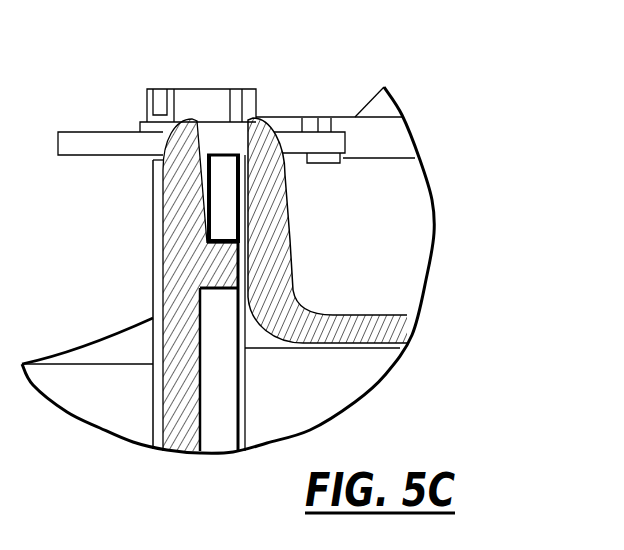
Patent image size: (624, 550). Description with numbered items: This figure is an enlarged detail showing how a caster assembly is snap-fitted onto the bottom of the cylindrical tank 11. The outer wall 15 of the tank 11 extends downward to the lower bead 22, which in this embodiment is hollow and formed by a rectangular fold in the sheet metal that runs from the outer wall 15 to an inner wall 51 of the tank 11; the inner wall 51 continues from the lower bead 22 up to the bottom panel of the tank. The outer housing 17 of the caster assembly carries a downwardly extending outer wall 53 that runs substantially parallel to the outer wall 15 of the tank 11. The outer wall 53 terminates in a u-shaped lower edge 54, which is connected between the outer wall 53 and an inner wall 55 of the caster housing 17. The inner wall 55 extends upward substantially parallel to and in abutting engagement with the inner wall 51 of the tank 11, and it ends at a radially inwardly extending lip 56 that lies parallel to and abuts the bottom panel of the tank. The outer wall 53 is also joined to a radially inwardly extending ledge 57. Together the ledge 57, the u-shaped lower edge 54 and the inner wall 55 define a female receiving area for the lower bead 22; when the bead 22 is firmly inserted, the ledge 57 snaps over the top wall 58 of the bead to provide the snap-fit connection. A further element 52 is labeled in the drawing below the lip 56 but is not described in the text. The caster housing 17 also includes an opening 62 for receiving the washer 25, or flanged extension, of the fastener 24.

The tank 11 is at (226, 423).
The outer wall 15 is at (248, 432).
The outer housing 17 is at (150, 398).
The lower bead 22 is at (223, 138).
The fastener 24 is at (229, 120).
The washer 25 is at (315, 138).
The inner wall 51 is at (249, 325).
The housing wall 52 is at (336, 350).
The outer wall 53 is at (172, 343).
The u-shaped lower edge 54 is at (201, 117).
The inner wall 55 is at (287, 215).
The radially inwardly extending lip 56 is at (388, 330).
The radially inwardly extending ledge 57 is at (220, 267).
The top wall 58 is at (228, 234).
The opening 62 is at (322, 161).